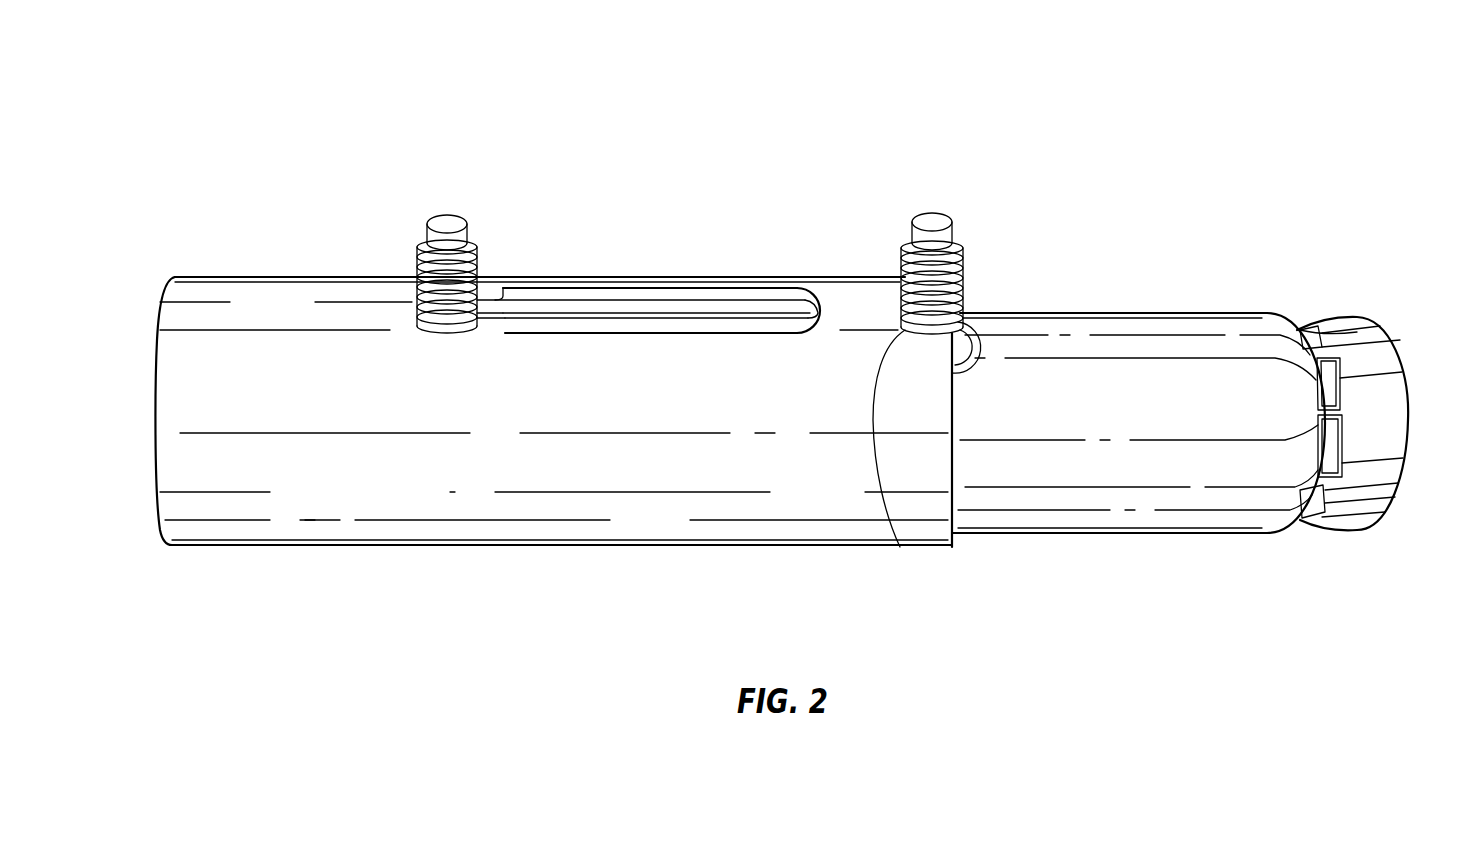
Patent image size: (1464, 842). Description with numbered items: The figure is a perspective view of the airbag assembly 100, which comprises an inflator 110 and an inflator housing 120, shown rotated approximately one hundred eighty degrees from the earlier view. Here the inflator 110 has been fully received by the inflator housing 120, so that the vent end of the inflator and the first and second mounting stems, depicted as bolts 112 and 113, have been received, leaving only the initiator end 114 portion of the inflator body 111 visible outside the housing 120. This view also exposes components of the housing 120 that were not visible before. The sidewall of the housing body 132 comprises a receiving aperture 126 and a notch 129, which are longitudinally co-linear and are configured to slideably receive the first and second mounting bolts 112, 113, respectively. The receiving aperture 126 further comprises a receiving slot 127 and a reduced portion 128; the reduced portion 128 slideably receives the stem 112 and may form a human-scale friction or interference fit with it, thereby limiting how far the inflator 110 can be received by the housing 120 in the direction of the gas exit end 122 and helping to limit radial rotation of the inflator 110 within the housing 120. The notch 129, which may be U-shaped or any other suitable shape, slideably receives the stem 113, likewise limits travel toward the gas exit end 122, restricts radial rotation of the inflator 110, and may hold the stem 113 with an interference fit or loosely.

The airbag assembly 100 is at (668, 98).
The inflator 110 is at (1160, 386).
The inflator body 111 is at (1097, 350).
The first mounting stem 112 is at (450, 218).
The second mounting stem 113 is at (935, 216).
The initiator end 114 is at (1397, 362).
The inflator housing 120 is at (288, 314).
The gas exit end 122 is at (152, 350).
The receiving aperture 126 is at (680, 300).
The receiving slot 127 is at (775, 300).
The reduced portion 128 is at (493, 306).
The notch 129 is at (900, 547).
The housing body 132 is at (428, 470).